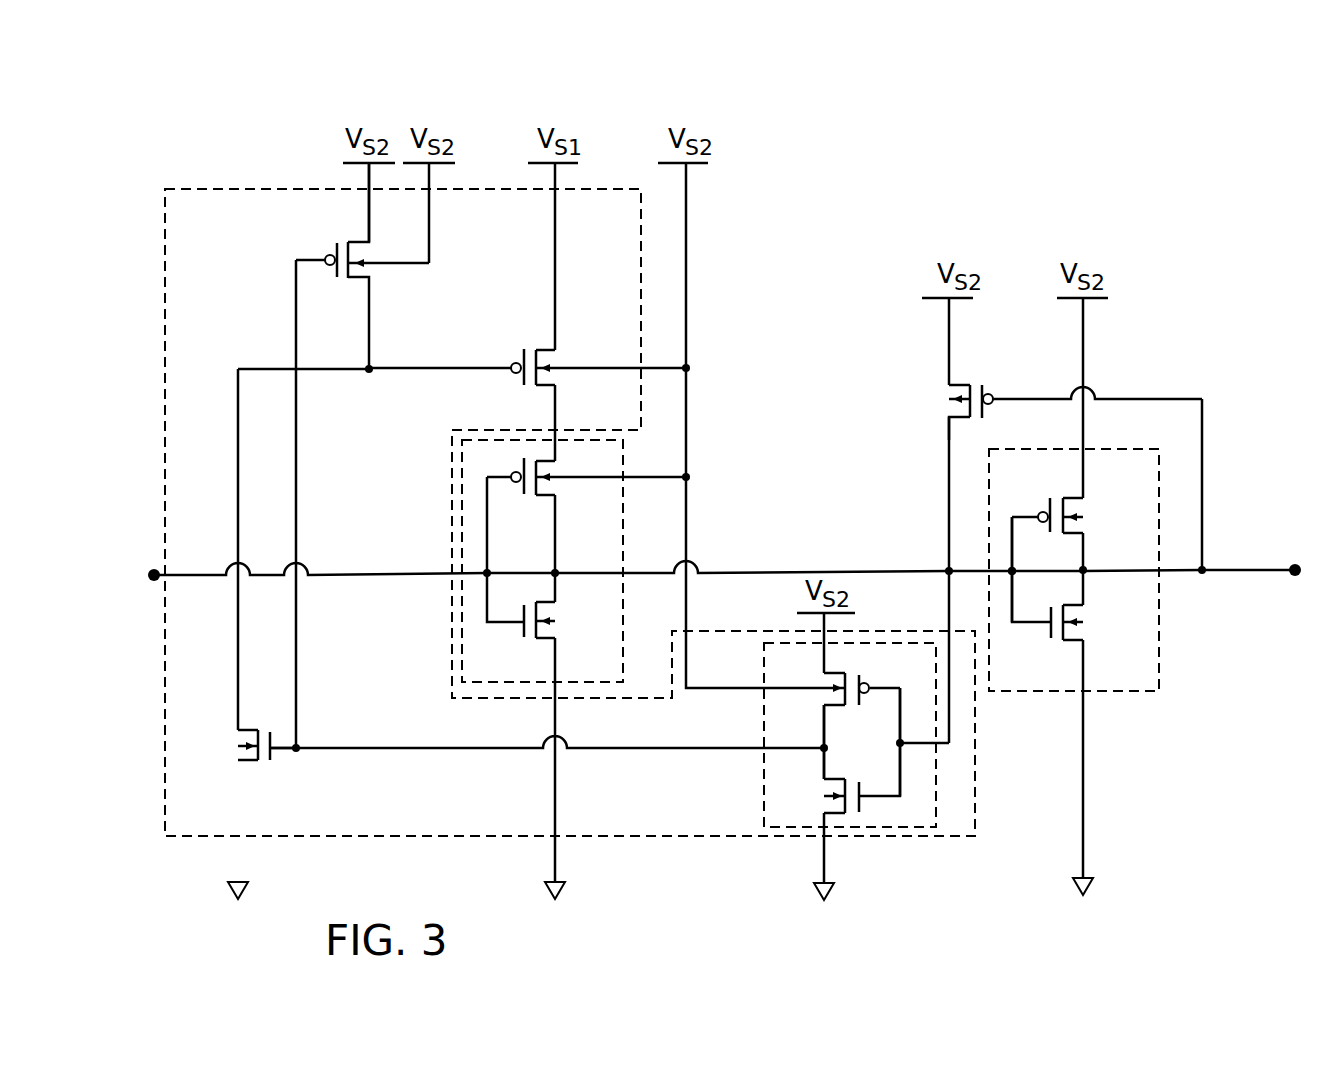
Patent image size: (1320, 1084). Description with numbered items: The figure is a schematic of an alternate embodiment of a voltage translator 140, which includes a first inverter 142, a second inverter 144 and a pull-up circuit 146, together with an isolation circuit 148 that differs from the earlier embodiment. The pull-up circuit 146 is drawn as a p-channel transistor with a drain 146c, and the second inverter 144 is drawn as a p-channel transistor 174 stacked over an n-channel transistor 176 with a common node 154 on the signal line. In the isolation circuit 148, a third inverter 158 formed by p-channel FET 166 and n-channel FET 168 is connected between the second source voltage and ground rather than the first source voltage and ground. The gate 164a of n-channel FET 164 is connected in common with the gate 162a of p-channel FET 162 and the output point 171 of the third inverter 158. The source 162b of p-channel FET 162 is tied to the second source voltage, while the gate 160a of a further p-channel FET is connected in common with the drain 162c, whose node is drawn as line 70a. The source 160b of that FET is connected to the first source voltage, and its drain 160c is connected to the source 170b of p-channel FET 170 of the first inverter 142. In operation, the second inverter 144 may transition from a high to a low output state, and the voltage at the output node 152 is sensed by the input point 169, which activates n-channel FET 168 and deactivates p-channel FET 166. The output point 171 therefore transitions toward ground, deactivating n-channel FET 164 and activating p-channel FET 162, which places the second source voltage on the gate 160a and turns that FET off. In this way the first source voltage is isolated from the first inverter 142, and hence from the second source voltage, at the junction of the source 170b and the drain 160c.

The voltage translator 140 is at (1069, 133).
The first inverter 142 is at (625, 497).
The second inverter 144 is at (1128, 695).
The pull-up circuit 146 is at (938, 399).
The drain of pull-up circuit transistor 146c is at (962, 419).
The isolation circuit 148 is at (285, 837).
The output node 152 is at (562, 600).
The node 154 is at (1030, 575).
The third inverter 158 is at (764, 680).
The gate of p-channel FET 160 160a is at (505, 370).
The source of p-channel FET 160 160b is at (537, 352).
The drain of p-channel FET 160 160c is at (548, 386).
The p-channel FET 162 is at (364, 257).
The gate of p-channel FET 162 162a is at (296, 284).
The source of p-channel FET 162 162b is at (350, 242).
The drain of p-channel FET 162 162c is at (348, 279).
The n-channel FET 164 is at (232, 737).
The gate of n-channel FET 164 164a is at (285, 745).
The p-channel FET 166 is at (864, 683).
The n-channel FET 168 is at (826, 784).
The input point 169 is at (898, 745).
The p-channel FET 170 is at (549, 491).
The source of p-channel FET 170 170b is at (534, 462).
The output point 171 is at (847, 742).
The PMOS transistor 174 is at (1091, 511).
The NMOS transistor 176 is at (1092, 635).
The node line 70a is at (397, 329).